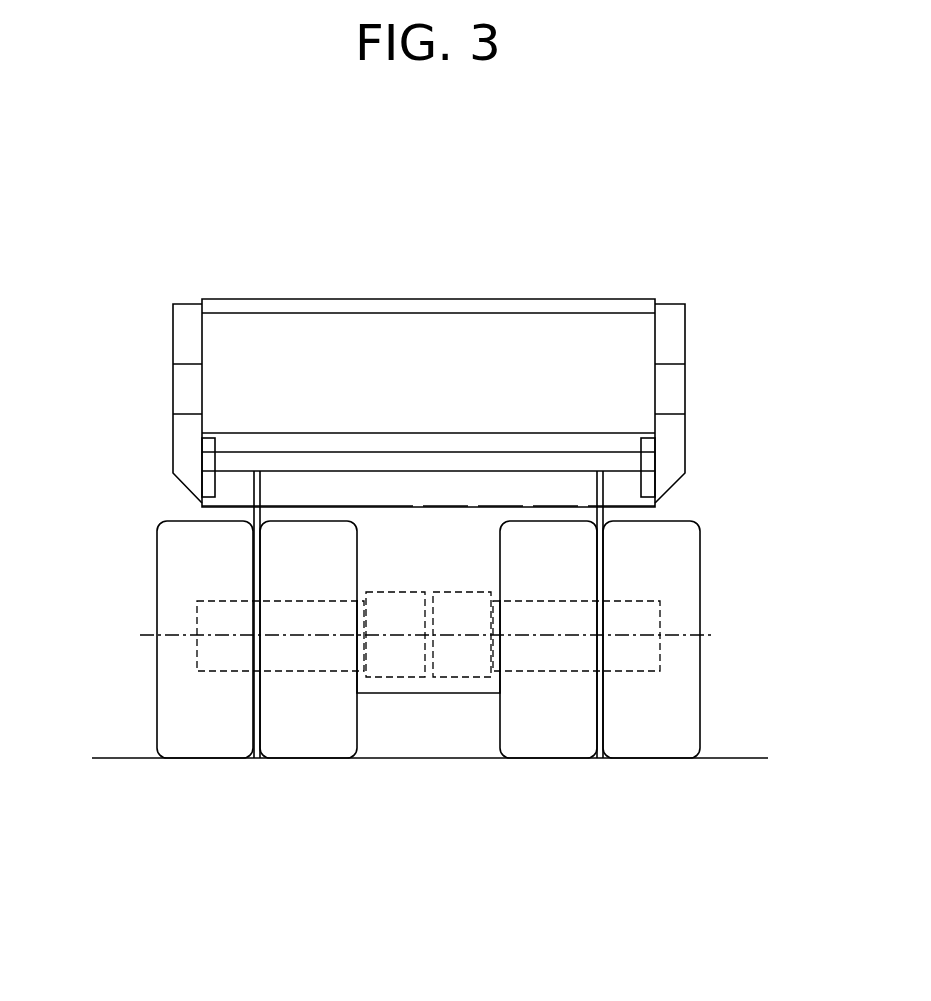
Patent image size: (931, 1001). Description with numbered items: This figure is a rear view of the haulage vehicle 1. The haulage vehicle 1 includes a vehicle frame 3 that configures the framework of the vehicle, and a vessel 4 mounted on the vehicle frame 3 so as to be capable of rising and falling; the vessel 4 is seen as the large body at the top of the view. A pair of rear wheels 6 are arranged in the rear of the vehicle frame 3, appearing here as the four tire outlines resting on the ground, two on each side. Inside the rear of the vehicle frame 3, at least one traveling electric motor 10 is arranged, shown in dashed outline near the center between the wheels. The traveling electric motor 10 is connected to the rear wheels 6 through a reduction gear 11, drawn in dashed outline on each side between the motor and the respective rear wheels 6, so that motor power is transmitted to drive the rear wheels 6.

The haulage vehicle 1 is at (432, 263).
The vehicle frame 3 is at (412, 700).
The vessel 4 is at (563, 333).
The rear wheels 6 is at (200, 750).
The traveling electric motor 10 is at (383, 592).
The reduction gear 11 is at (232, 671).